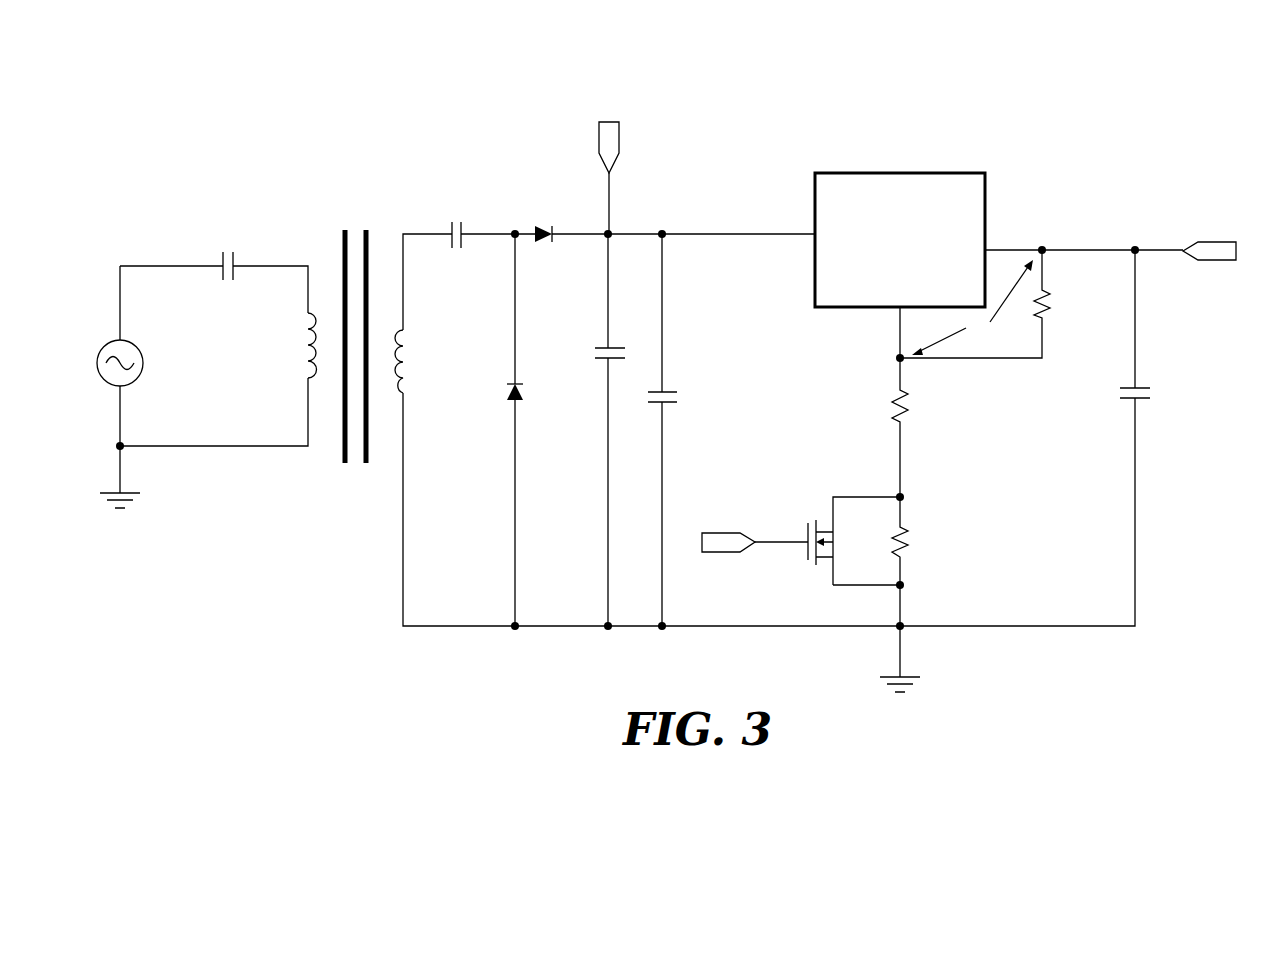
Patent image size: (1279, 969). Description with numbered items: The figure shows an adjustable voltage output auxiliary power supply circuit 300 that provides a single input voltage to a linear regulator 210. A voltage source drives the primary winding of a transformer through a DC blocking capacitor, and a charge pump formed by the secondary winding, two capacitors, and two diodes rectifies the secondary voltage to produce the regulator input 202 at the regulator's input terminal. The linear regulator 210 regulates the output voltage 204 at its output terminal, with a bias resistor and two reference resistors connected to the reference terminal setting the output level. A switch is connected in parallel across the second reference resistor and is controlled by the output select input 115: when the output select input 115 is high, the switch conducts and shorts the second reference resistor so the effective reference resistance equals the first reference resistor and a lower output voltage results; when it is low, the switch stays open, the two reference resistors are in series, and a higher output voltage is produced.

The adjustable voltage output auxiliary power supply circuit 300 is at (327, 569).
The input V_IN_LR 202 is at (607, 121).
The linear regulator 210 is at (888, 172).
The output voltage V_OUT 204 is at (1223, 260).
The V_out_select input 115 is at (703, 552).